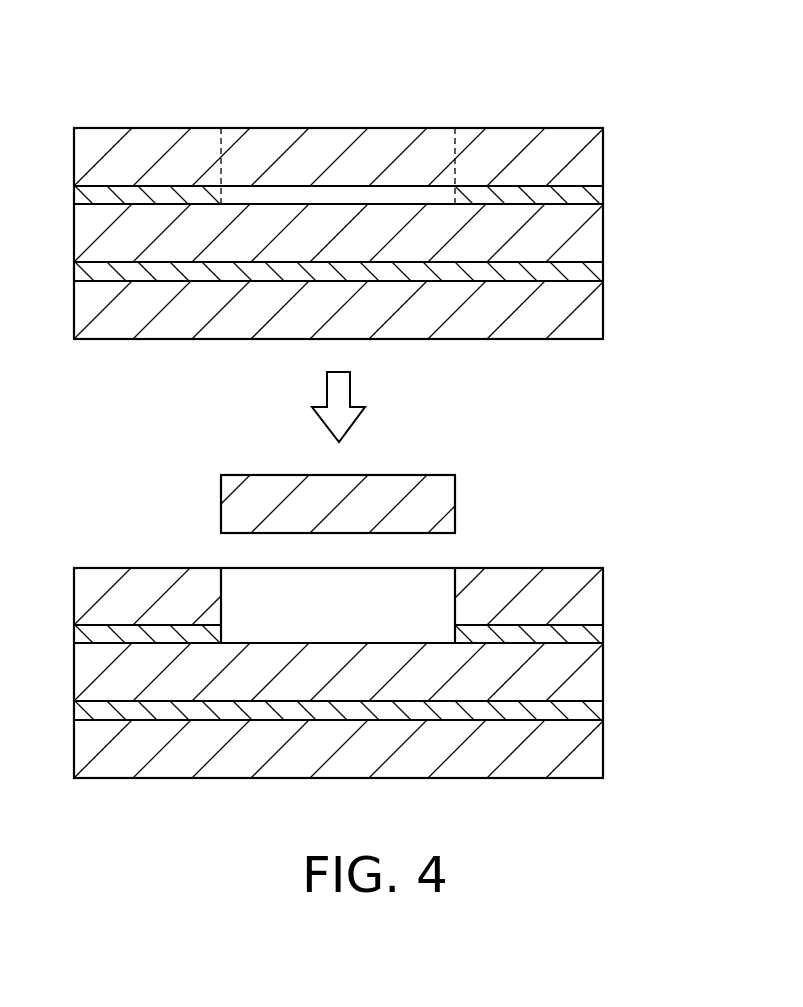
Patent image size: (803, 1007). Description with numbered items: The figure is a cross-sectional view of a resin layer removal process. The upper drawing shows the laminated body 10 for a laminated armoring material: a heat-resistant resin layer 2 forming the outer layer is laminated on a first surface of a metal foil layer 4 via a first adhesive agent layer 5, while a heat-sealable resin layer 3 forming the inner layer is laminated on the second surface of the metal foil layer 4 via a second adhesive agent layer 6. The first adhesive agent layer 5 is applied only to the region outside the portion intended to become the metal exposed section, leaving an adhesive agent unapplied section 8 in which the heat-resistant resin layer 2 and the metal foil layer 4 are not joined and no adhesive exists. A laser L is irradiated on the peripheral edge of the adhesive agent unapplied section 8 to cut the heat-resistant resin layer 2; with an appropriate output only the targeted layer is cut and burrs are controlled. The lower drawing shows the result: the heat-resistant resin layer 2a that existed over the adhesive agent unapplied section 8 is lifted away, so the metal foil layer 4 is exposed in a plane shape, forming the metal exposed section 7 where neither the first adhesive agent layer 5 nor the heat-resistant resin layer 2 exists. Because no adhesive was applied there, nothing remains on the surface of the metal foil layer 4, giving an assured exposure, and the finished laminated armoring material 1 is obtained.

The laminated armoring material 1 is at (588, 535).
The laminated body for a laminated armoring material 10 is at (592, 91).
The heat-resistant resin layer 2 is at (583, 161).
The heat-resistant resin layer existing at the adhesive agent unapplied section 2a is at (323, 147).
The heat-sealable resin layer 3 is at (588, 312).
The metal foil layer 4 is at (586, 233).
The first adhesive agent layer 5 is at (583, 195).
The second adhesive agent layer 6 is at (586, 272).
The metal exposed section 7 is at (267, 600).
The adhesive agent unapplied section 8 is at (385, 195).
The laser L is at (228, 108).